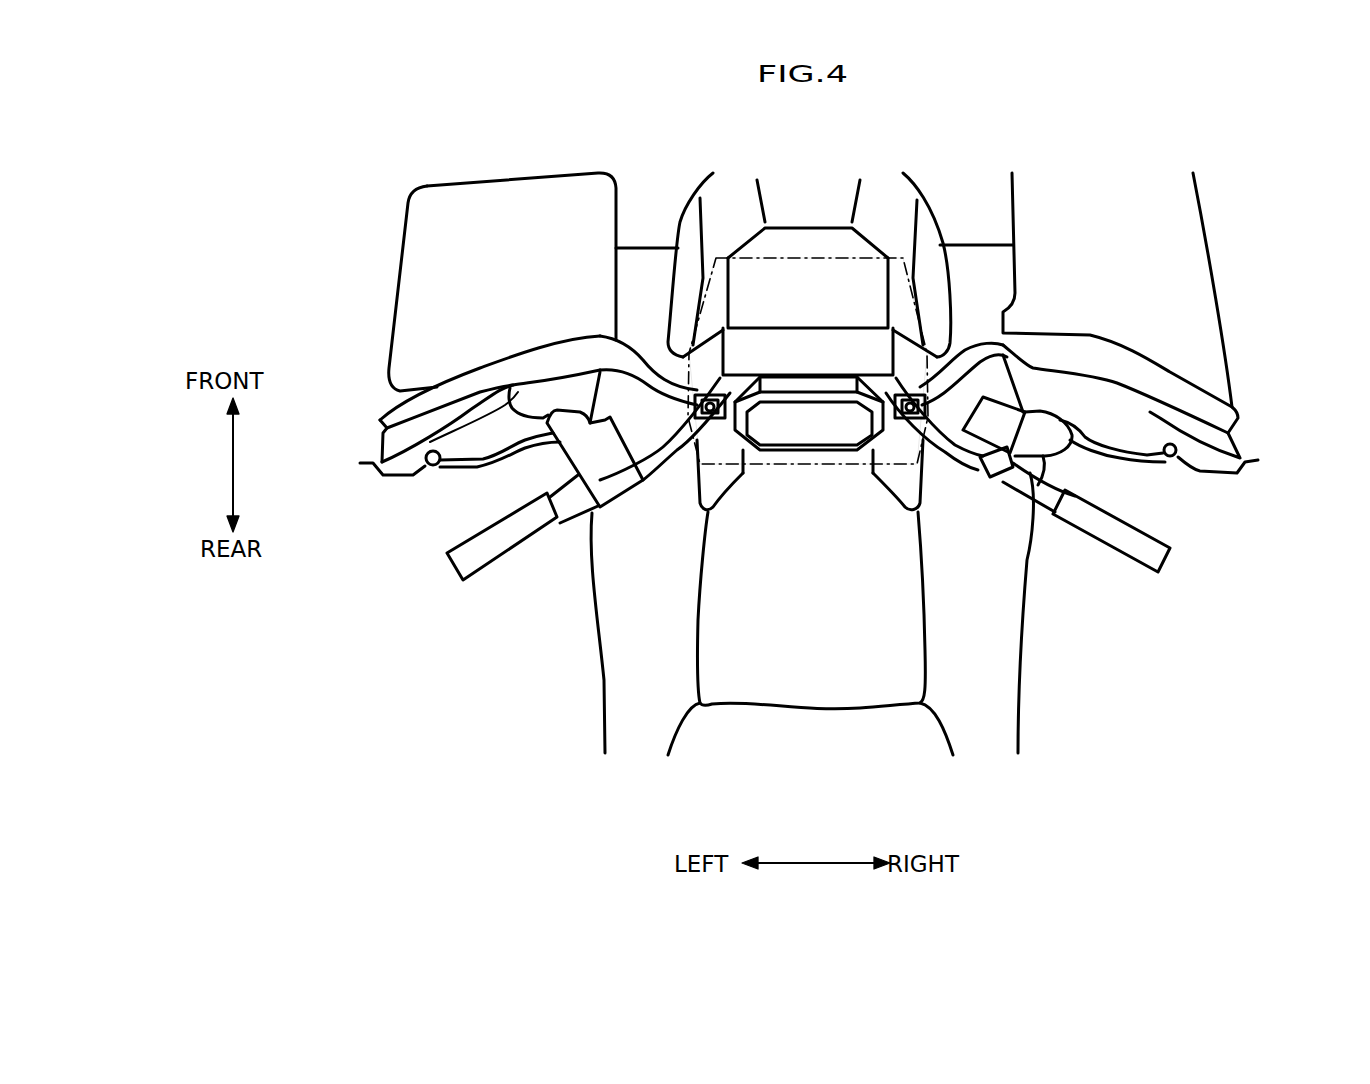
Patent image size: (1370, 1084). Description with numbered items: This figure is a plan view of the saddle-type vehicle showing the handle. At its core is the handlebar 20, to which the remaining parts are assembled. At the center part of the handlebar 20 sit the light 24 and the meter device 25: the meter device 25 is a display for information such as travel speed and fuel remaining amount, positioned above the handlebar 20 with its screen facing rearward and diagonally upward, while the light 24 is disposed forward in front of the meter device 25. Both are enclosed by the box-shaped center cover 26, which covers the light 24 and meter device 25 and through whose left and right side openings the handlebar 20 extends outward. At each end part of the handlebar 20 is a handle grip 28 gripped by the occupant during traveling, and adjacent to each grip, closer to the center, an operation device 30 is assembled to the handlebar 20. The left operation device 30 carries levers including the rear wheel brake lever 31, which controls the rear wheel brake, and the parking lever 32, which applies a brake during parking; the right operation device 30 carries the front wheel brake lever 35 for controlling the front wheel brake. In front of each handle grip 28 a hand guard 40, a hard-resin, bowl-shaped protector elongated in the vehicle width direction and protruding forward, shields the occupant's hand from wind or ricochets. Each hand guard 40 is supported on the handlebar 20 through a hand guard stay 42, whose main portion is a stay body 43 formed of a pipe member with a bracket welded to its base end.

The handlebar 20 is at (666, 468).
The light 24 is at (807, 282).
The meter device 25 is at (811, 422).
The center cover 26 is at (903, 256).
The handle grip 28 is at (500, 537).
The operation device 30 is at (574, 494).
The rear wheel brake lever 31 is at (480, 463).
The parking lever 32 is at (430, 441).
The front wheel brake lever 35 is at (1147, 461).
The hand guard 40 is at (510, 362).
The hand guard stay 42 is at (651, 141).
The stay body 43 is at (642, 336).